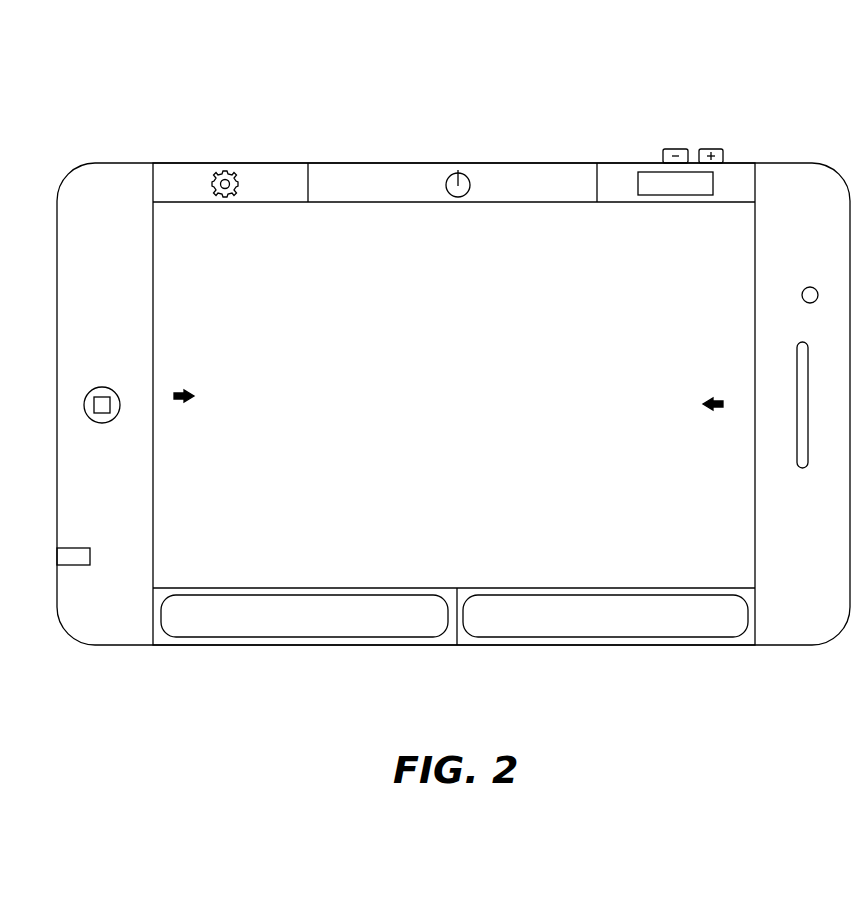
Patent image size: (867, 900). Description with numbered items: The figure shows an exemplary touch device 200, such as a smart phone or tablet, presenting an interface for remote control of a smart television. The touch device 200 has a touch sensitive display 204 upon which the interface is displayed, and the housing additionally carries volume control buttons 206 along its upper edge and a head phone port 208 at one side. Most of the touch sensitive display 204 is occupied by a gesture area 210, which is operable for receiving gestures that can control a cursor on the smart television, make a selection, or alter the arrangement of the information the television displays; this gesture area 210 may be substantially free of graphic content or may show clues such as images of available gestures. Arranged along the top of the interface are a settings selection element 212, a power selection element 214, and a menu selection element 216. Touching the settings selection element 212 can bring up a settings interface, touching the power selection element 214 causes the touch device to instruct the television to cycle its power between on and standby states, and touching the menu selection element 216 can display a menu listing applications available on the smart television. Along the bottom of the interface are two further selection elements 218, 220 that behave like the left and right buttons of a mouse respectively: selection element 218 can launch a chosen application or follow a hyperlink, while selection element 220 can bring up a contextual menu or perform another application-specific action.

The touch device 200 is at (176, 92).
The touch sensitive display 204 is at (150, 228).
The volume control buttons 206 is at (688, 150).
The head phone port 208 is at (70, 557).
The gesture area 210 is at (358, 233).
The settings selection element 212 is at (243, 163).
The power selection element 214 is at (454, 163).
The menu selection element 216 is at (630, 163).
The selection element 218 is at (307, 637).
The selection element 220 is at (607, 637).